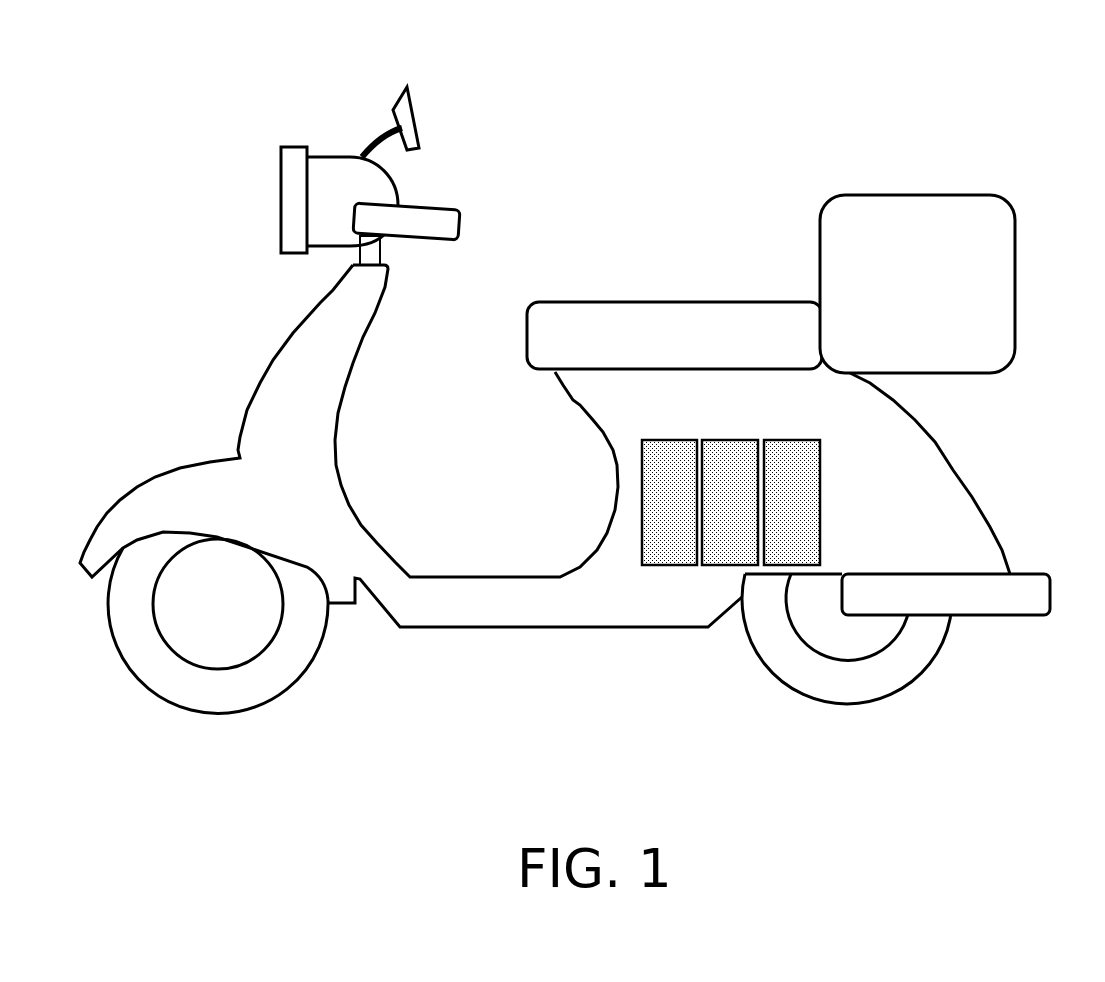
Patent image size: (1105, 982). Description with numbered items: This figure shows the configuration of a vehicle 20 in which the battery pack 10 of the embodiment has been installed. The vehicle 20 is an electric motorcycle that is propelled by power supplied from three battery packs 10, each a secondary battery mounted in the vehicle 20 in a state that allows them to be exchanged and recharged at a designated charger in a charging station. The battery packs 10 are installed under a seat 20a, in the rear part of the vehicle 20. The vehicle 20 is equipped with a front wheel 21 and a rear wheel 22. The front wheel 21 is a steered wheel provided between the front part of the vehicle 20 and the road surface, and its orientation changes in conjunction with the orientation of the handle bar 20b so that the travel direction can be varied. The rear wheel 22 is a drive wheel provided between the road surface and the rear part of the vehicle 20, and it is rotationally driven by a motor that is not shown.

The battery pack 10 is at (790, 457).
The vehicle 20 is at (255, 110).
The seat 20a is at (602, 318).
The handle bar 20b is at (437, 220).
The front wheel 21 is at (233, 688).
The rear wheel 22 is at (872, 682).